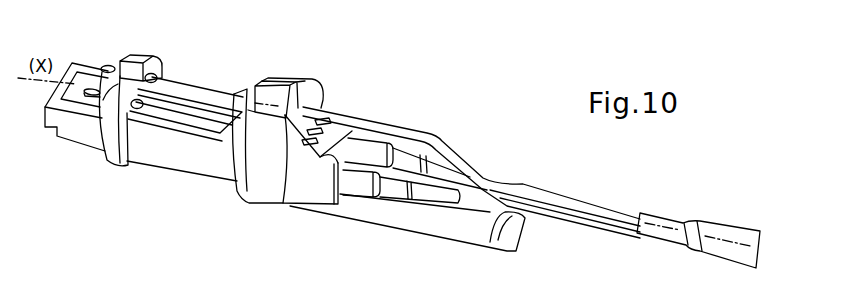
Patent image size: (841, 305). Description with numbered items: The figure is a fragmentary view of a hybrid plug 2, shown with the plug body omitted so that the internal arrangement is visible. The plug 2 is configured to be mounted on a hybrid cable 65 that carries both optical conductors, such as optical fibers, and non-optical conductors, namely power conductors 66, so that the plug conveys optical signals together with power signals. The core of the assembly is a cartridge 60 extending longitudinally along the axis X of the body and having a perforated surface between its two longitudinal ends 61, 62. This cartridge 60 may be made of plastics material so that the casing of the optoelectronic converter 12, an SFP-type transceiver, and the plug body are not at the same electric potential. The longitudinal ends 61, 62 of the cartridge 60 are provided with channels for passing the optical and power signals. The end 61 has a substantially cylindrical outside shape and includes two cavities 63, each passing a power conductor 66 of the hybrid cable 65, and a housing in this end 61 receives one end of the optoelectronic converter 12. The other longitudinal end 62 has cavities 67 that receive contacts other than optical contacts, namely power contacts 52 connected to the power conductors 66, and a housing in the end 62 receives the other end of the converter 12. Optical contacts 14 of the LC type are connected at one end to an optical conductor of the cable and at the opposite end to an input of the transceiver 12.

The plug 2 is at (501, 132).
The optoelectronic converter 12 is at (77, 137).
The optical contacts 14 is at (427, 193).
The power contacts 52 is at (92, 89).
The cartridge 60 is at (293, 82).
The longitudinal end of the cartridge 61 is at (253, 173).
The longitudinal end of the cartridge 62 is at (140, 57).
The cavities 63 is at (271, 104).
The hybrid cable 65 is at (723, 232).
The power conductors 66 is at (406, 128).
The cavities 67 is at (127, 104).